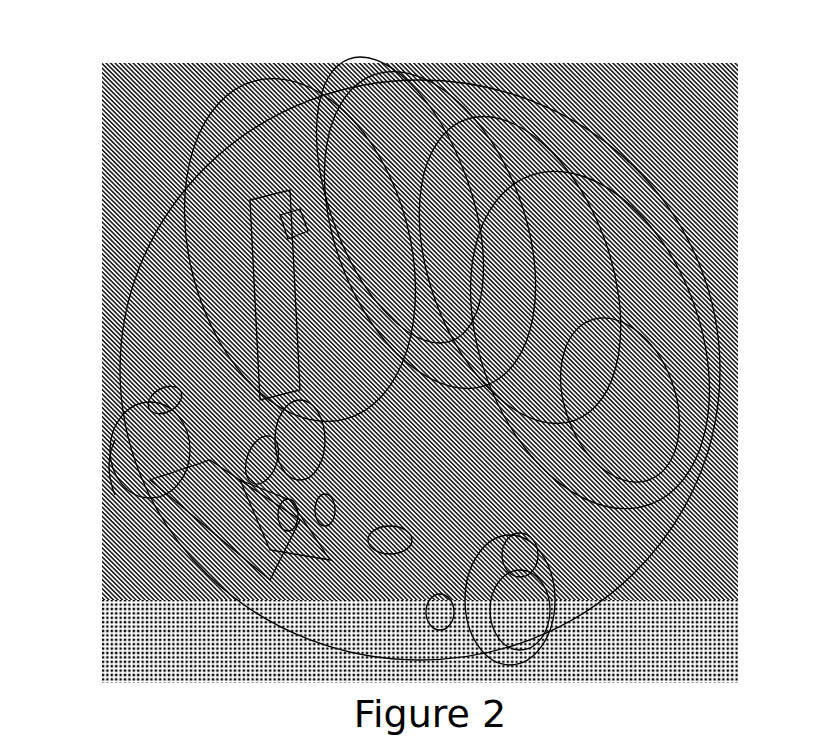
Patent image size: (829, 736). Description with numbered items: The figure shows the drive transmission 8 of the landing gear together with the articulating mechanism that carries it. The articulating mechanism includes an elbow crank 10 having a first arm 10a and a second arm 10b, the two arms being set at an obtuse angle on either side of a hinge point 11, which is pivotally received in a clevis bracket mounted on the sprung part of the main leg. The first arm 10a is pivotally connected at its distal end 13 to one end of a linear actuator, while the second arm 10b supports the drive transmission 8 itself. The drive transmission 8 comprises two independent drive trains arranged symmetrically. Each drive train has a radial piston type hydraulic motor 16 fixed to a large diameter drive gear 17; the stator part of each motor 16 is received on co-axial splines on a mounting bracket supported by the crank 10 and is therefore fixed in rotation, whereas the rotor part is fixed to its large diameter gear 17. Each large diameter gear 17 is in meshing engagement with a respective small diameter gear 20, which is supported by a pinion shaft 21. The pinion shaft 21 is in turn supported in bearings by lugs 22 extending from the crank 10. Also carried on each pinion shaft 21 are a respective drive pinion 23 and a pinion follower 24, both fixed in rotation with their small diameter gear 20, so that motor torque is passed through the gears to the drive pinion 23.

The drive transmission 8 is at (693, 138).
The elbow crank 10 is at (270, 330).
The first arm 10a is at (287, 230).
The second arm 10b is at (262, 530).
The hinge point 11 is at (160, 497).
The distal end 13 is at (290, 150).
The hydraulic motor 16 is at (363, 103).
The large diameter drive gear 17 is at (470, 85).
The small diameter gear 20 is at (300, 420).
The pinion shaft 21 is at (265, 430).
The lugs 22 is at (163, 443).
The drive pinion 23 is at (167, 415).
The pinion follower 24 is at (107, 467).